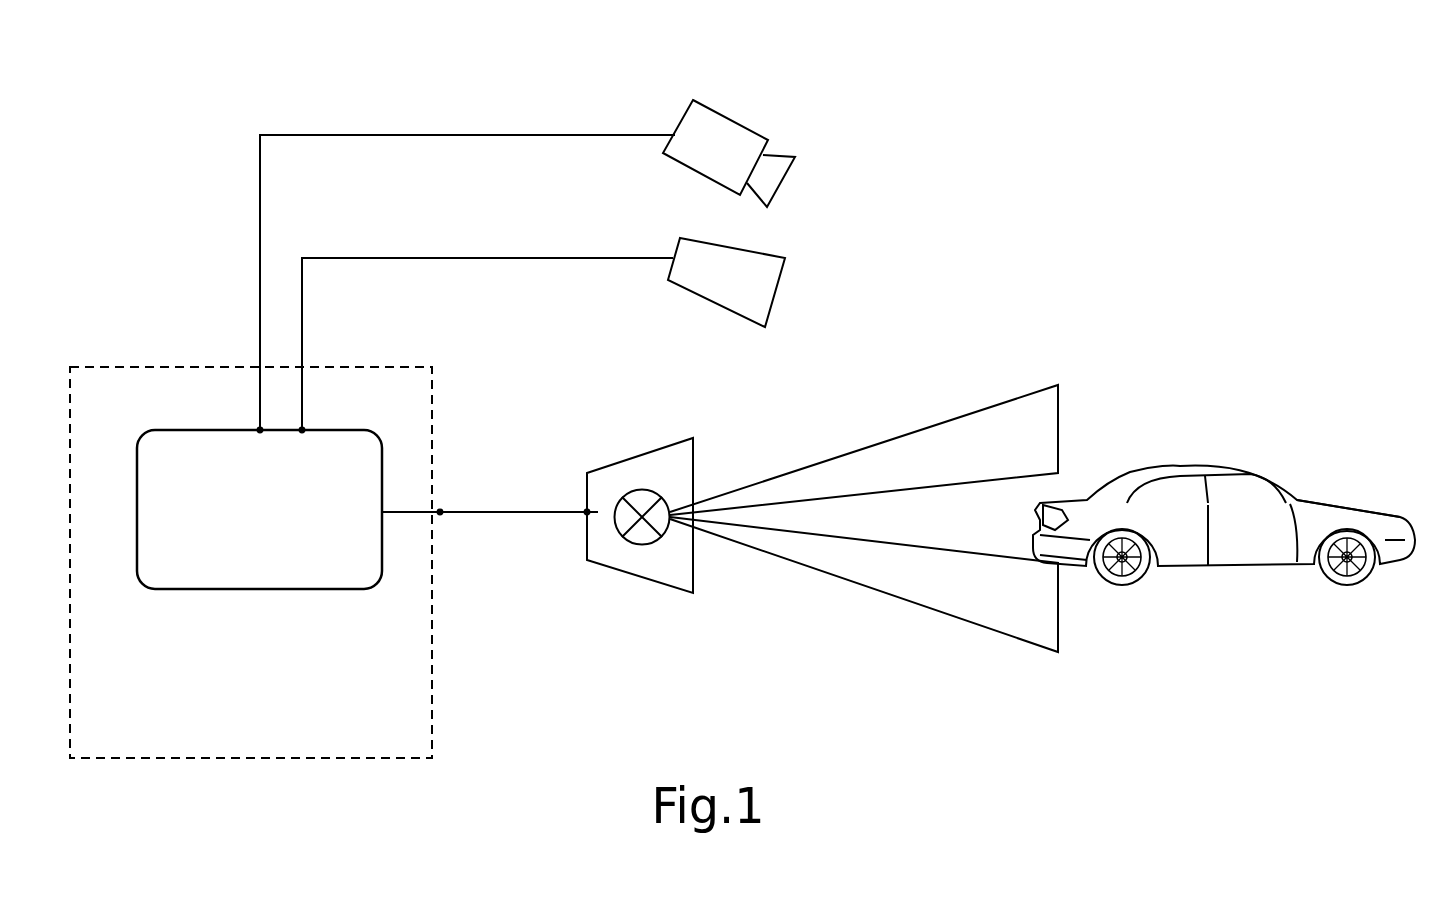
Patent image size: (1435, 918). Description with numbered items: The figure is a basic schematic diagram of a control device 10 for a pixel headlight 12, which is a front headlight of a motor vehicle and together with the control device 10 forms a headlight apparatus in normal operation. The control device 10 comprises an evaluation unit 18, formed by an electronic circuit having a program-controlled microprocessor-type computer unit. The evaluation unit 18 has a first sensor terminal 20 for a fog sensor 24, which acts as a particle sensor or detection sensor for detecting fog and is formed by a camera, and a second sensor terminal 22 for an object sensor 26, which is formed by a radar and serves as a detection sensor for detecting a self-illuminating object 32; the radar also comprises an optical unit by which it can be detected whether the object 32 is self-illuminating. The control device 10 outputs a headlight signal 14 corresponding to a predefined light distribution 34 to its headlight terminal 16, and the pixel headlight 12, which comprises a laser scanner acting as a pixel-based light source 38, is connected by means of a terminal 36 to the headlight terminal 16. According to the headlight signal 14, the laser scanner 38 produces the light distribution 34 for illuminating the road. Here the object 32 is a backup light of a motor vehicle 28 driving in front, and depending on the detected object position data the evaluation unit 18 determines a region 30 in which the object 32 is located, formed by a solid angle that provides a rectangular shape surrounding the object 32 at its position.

The control device 10 is at (112, 366).
The pixel headlight 12 is at (697, 466).
The headlight signal 14 is at (512, 513).
The headlight terminal 16 is at (441, 511).
The evaluation unit 18 is at (203, 430).
The first sensor terminal 20 is at (258, 430).
The second sensor terminal 22 is at (305, 430).
The fog sensor 24 is at (750, 130).
The object sensor 26 is at (778, 252).
The motor vehicle driving in front 28 is at (1193, 467).
The region 30 is at (965, 537).
The self-illuminating object 32 is at (1042, 510).
The light distribution 34 is at (913, 427).
The terminal 36 is at (587, 511).
The pixel-based light source 38 is at (628, 494).